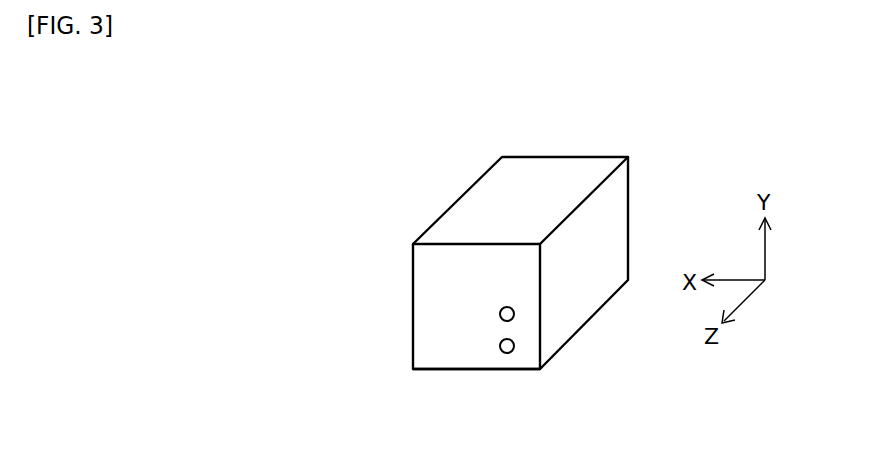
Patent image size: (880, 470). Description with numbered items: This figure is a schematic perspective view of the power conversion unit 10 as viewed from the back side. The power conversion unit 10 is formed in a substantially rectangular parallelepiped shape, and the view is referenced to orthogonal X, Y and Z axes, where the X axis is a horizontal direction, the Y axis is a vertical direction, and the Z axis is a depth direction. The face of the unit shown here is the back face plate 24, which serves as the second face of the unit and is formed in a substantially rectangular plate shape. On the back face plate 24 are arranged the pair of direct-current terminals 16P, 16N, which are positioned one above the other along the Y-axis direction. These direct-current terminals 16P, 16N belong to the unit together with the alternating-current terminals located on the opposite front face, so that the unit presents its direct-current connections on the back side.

The power conversion unit 10 is at (485, 213).
The back face plate 24 is at (466, 335).
The direct-current terminal 16P is at (515, 314).
The direct-current terminal 16N is at (515, 346).